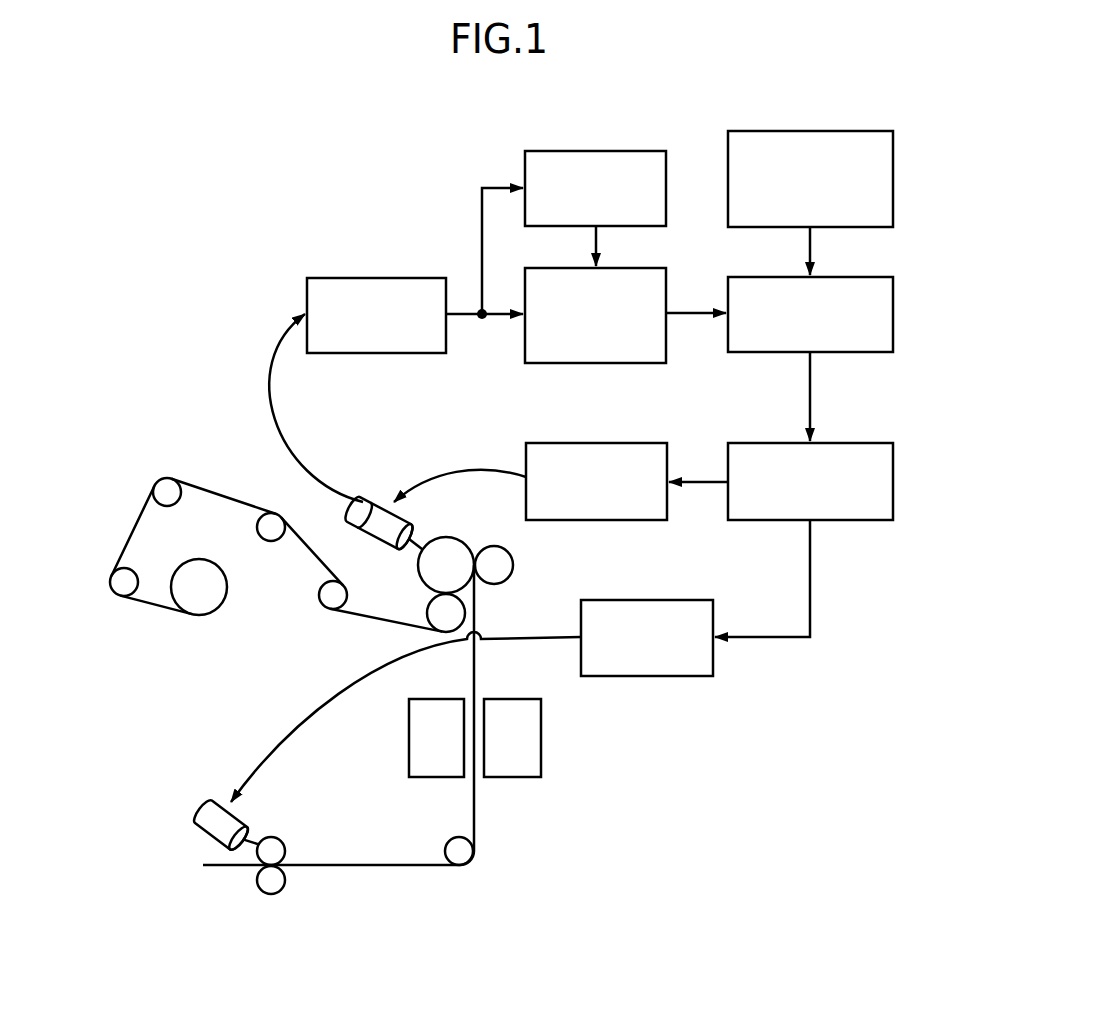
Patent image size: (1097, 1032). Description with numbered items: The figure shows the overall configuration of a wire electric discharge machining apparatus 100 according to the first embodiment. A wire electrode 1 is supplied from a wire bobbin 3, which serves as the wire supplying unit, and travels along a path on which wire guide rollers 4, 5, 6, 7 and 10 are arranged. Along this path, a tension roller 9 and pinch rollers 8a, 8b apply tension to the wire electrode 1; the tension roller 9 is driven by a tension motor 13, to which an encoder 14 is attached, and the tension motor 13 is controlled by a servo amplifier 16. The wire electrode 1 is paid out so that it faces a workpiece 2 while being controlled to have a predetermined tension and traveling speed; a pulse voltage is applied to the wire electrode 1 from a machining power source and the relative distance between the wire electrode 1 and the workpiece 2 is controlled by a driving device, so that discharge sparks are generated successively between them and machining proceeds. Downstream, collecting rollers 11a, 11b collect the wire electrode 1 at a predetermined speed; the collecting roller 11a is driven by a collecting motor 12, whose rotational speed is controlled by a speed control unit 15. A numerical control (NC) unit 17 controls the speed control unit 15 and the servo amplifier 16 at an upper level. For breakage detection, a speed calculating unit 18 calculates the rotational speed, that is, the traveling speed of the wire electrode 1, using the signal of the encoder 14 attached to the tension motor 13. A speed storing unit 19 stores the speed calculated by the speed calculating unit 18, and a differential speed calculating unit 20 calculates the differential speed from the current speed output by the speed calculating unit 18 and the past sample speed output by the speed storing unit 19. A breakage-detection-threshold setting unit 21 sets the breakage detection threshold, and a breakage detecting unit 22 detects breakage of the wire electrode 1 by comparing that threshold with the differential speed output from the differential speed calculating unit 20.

The wire electrode 1 is at (354, 861).
The workpiece 2 is at (541, 735).
The wire bobbin 3 is at (221, 604).
The wire guide roller 4 is at (136, 572).
The wire guide roller 5 is at (178, 503).
The wire guide roller 6 is at (271, 542).
The wire guide roller 7 is at (333, 580).
The pinch roller 8a is at (428, 608).
The pinch roller 8b is at (514, 565).
The tension roller 9 is at (450, 537).
The wire guide roller 10 is at (450, 839).
The collecting roller 11a is at (271, 837).
The collecting roller 11b is at (271, 895).
The collecting motor 12 is at (222, 795).
The tension motor 13 is at (388, 505).
The encoder 14 is at (365, 500).
The speed control unit 15 is at (669, 600).
The servo amplifier 16 is at (615, 443).
The numerical control (NC) unit 17 is at (850, 443).
The speed calculating unit 18 is at (405, 278).
The speed storing unit 19 is at (611, 151).
The differential speed calculating unit 20 is at (623, 268).
The breakage-detection-threshold setting unit 21 is at (850, 131).
The breakage detecting unit 22 is at (850, 277).
The wire electric discharge machining apparatus 100 is at (762, 848).